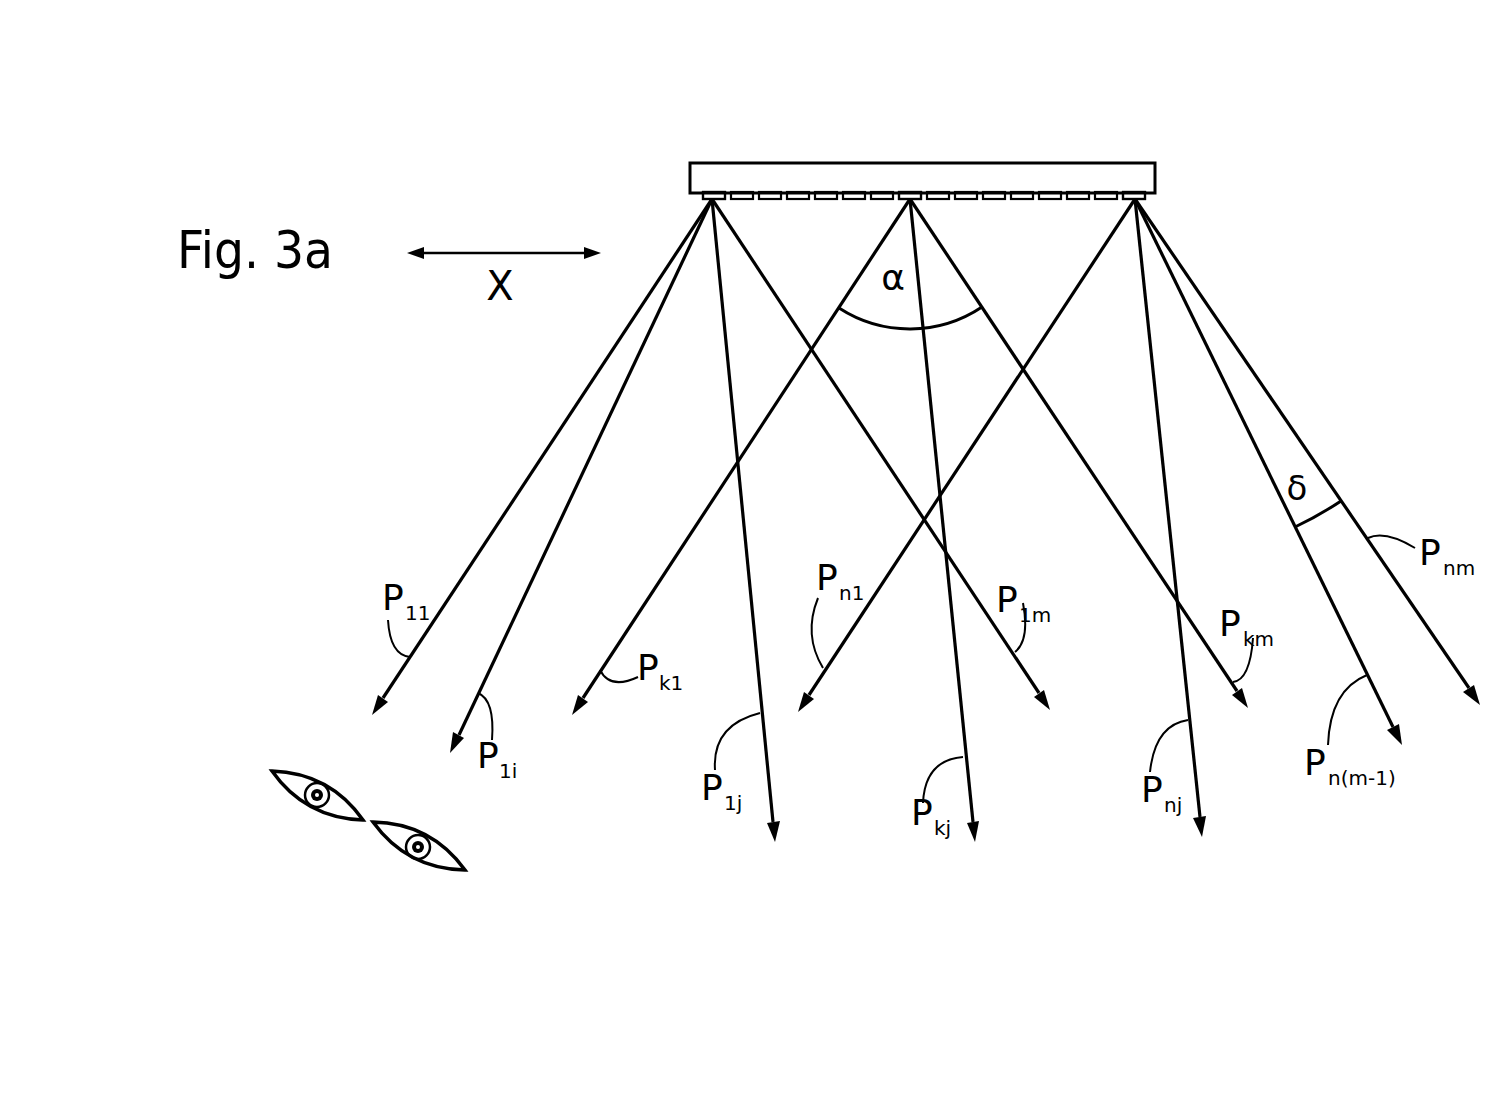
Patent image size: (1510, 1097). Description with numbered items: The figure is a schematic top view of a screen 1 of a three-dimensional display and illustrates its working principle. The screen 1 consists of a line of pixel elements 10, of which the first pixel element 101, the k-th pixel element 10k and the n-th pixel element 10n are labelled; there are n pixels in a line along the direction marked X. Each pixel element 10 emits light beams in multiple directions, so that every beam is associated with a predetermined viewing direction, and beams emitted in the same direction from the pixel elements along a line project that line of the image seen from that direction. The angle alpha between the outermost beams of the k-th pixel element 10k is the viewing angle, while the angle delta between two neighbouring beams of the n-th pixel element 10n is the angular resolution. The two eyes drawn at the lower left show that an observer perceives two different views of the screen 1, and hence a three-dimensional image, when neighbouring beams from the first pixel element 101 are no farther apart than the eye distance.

The screen 1 is at (1145, 170).
The pixel element 10 is at (924, 195).
The first pixel element 101 is at (717, 194).
The k-th pixel element 10k is at (912, 192).
The n-th pixel element 10n is at (1133, 192).